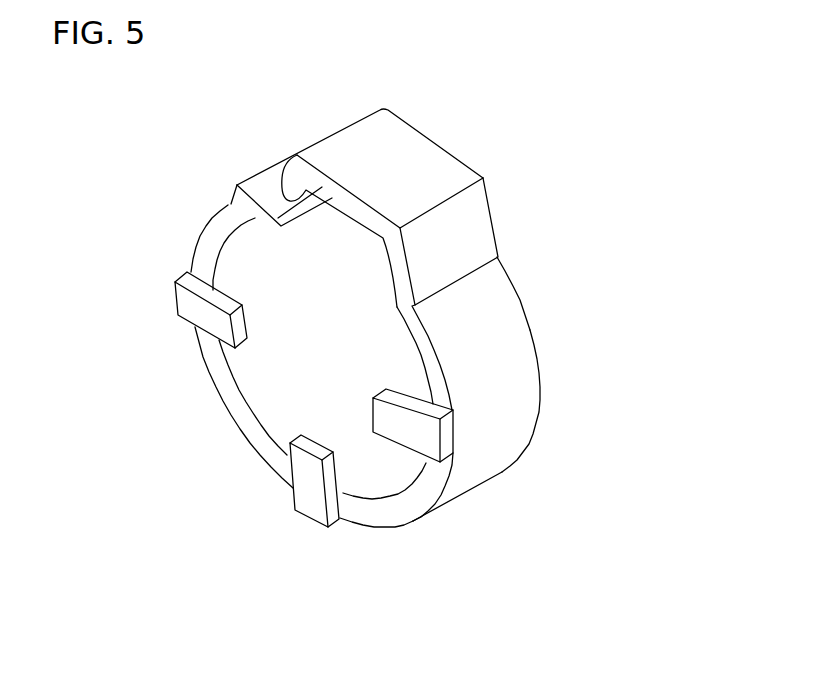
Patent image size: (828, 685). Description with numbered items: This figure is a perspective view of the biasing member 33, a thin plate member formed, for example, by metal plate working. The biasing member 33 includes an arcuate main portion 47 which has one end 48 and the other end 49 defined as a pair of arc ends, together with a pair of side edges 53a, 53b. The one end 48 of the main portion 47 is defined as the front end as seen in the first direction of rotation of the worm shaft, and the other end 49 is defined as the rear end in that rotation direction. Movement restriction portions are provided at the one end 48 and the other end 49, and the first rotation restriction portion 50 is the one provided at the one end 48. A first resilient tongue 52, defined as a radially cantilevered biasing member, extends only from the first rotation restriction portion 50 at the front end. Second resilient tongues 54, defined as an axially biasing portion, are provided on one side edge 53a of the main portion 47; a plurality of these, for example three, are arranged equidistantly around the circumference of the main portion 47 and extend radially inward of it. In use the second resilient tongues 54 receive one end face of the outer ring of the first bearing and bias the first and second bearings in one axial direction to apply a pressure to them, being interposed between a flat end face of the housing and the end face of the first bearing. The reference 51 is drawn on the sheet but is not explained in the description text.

The biasing member 33 is at (489, 127).
The arcuate main portion 47 is at (507, 313).
The one end 48 is at (492, 281).
The other end 49 is at (228, 206).
The first rotation restriction portion 50 is at (473, 235).
The groove 51 is at (237, 202).
The first resilient tongue 52 is at (402, 147).
The side edge 53a is at (450, 485).
The side edge 53b is at (543, 383).
The second resilient tongues 54 is at (195, 310).